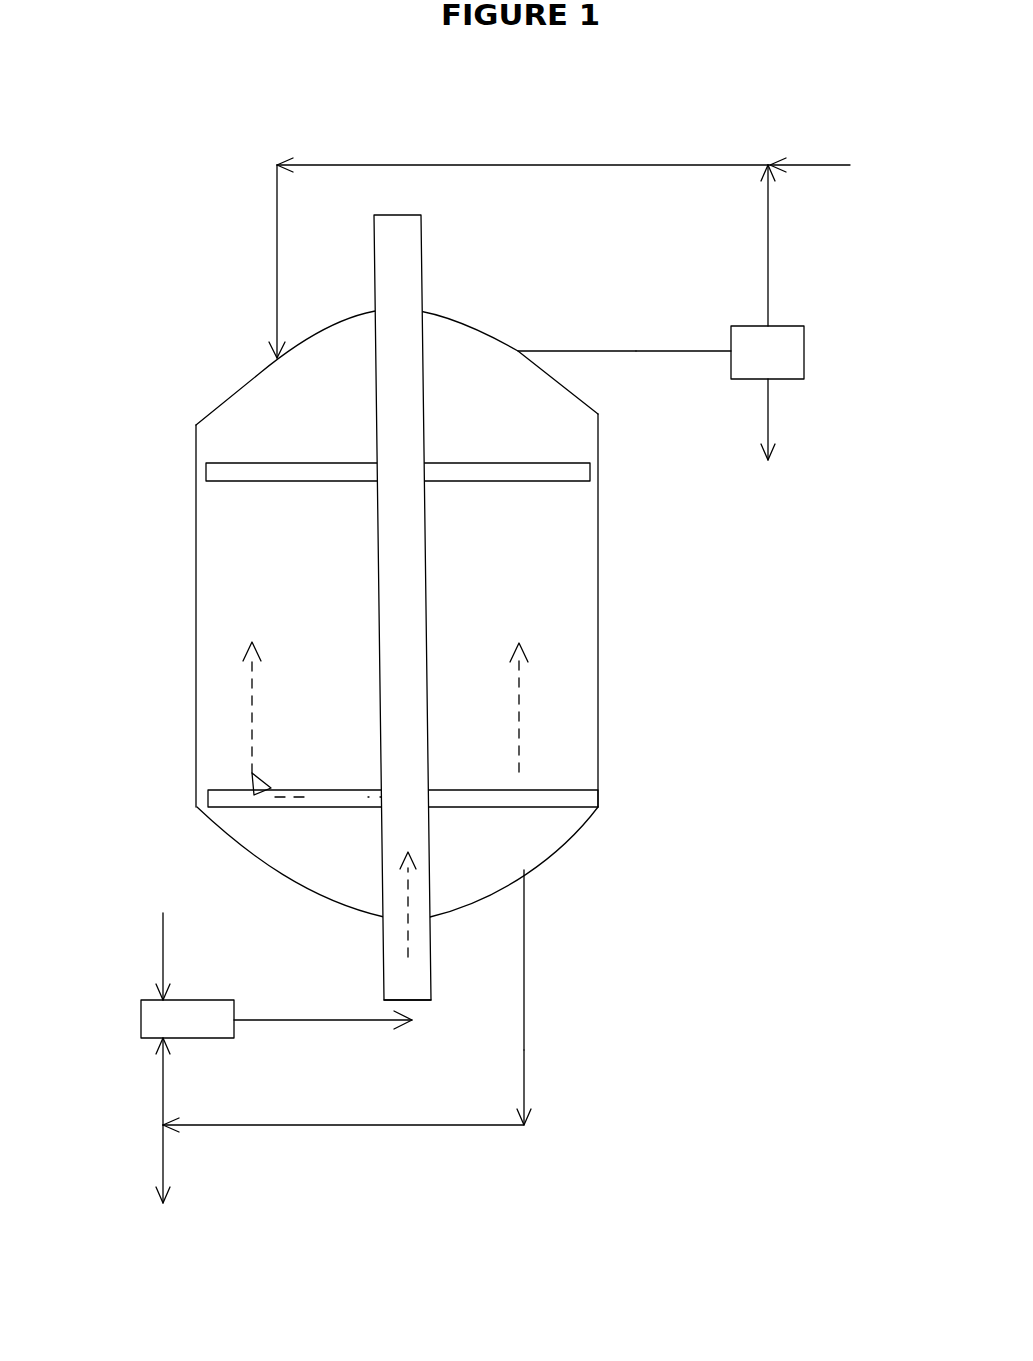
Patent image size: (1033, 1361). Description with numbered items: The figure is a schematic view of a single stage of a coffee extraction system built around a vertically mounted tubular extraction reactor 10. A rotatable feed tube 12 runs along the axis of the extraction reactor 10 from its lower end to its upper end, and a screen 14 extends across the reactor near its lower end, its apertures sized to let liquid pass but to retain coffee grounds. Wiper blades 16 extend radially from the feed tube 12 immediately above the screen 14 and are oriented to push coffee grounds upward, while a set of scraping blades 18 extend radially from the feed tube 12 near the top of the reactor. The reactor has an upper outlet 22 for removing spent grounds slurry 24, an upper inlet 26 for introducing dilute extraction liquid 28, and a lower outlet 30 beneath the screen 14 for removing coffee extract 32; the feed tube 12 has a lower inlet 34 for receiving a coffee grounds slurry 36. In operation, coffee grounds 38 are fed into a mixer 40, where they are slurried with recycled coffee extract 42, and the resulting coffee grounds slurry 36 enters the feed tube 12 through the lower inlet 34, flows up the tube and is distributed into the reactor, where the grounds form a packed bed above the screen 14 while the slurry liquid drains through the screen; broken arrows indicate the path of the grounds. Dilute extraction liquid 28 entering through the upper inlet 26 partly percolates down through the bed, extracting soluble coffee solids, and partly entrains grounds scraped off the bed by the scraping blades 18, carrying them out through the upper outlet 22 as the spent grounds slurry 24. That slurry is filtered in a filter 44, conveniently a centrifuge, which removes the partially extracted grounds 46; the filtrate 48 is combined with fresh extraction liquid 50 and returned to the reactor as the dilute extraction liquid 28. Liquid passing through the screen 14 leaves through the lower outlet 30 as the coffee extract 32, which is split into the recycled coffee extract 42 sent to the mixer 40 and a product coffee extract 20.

The extraction reactor 10 is at (598, 680).
The feed tube 12 is at (385, 575).
The screen 14 is at (562, 810).
The wiper blades 16 is at (590, 790).
The scraping blades 18 is at (577, 473).
The product coffee extract 20 is at (169, 1188).
The upper outlet 22 is at (518, 351).
The spent grounds slurry 24 is at (636, 351).
The upper inlet 26 is at (273, 358).
The dilute extraction liquid 28 is at (277, 242).
The lower outlet 30 is at (524, 870).
The coffee extract 32 is at (524, 1050).
The lower inlet 34 is at (410, 1000).
The coffee grounds slurry 36 is at (305, 1018).
The coffee grounds 38 is at (163, 913).
The mixer 40 is at (187, 1019).
The recycled coffee extract 42 is at (163, 1087).
The filter 44 is at (767, 352).
The partially extracted grounds 46 is at (770, 440).
The filtrate 48 is at (768, 258).
The fresh extraction liquid 50 is at (579, 167).